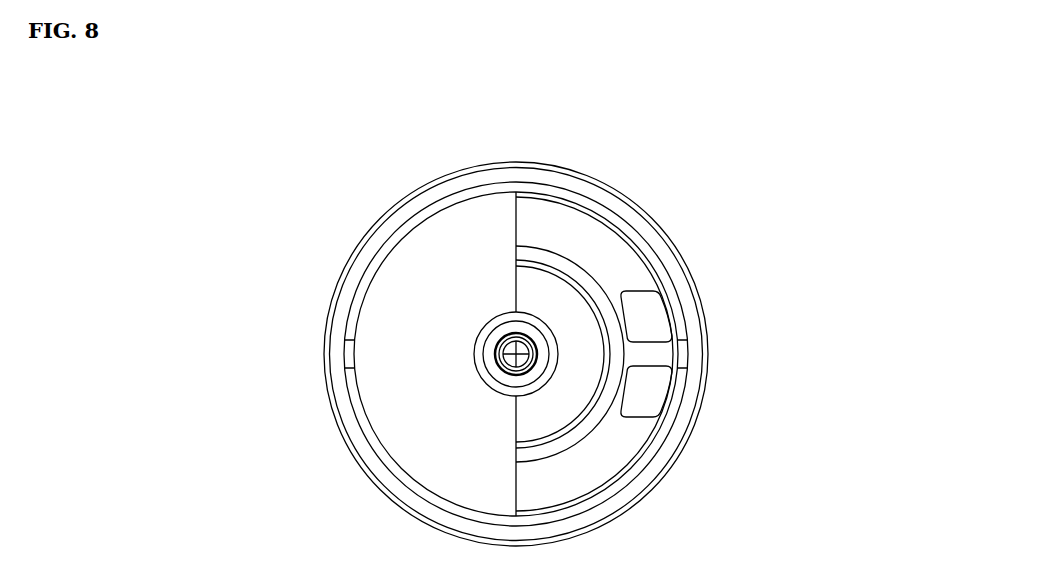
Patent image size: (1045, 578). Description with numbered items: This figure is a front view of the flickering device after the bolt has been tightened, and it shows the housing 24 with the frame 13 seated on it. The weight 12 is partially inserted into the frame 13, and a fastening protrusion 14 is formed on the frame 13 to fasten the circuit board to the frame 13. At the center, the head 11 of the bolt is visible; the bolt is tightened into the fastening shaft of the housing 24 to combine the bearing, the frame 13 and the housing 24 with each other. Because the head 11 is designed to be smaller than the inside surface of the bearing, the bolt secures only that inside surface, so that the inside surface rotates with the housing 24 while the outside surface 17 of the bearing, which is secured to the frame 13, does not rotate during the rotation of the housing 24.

The head 11 is at (528, 340).
The weight 12 is at (433, 262).
The frame 13 is at (657, 352).
The fastening protrusion 14 is at (345, 354).
The outside surface 17 is at (503, 378).
The housing 24 is at (668, 453).